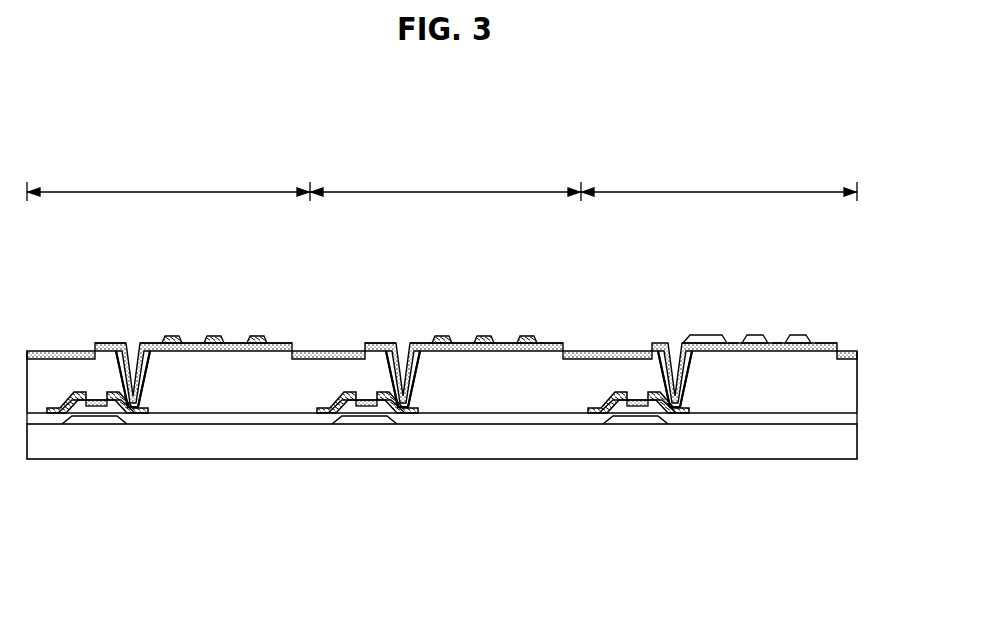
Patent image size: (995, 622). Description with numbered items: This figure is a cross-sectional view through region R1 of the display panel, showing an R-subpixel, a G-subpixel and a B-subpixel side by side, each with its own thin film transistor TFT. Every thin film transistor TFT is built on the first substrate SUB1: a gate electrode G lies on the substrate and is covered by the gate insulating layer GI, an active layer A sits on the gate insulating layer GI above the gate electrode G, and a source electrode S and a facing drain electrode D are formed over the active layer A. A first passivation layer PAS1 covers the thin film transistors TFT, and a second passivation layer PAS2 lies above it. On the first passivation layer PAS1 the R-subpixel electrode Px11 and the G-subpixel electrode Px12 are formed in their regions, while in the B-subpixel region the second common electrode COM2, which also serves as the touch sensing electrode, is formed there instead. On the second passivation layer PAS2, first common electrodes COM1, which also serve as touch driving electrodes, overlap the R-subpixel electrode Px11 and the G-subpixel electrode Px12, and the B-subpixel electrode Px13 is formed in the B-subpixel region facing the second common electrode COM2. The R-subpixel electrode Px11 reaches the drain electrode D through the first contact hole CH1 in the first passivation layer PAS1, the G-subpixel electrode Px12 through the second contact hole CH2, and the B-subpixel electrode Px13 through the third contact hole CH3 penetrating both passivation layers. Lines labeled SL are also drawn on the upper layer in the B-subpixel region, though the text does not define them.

The region R1 is at (88, 130).
The thin film transistor TFT is at (368, 405).
The source electrode S is at (61, 414).
The gate electrode G is at (81, 422).
The active layer A is at (97, 407).
The drain electrode D is at (131, 414).
The first substrate SUB1 is at (193, 448).
The gate insulating layer GI is at (262, 420).
The first passivation layer PAS1 is at (485, 390).
The second passivation layer PAS2 is at (563, 353).
The first contact hole CH1 is at (133, 345).
The second contact hole CH2 is at (403, 345).
The third contact hole CH3 is at (675, 345).
The first common electrode COM1 is at (527, 336).
The second common electrode COM2 is at (822, 343).
The R-subpixel electrode Px11 is at (278, 347).
The G-subpixel electrode Px12 is at (548, 347).
The B-subpixel electrode Px13 is at (705, 335).
The sensing line SL is at (733, 342).